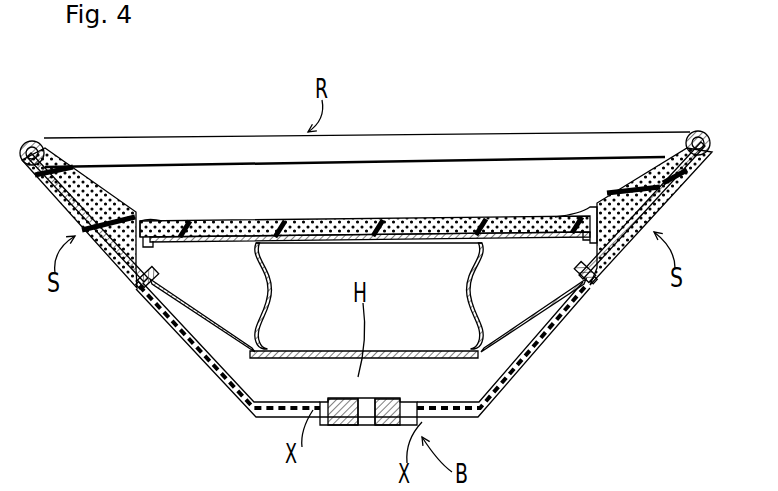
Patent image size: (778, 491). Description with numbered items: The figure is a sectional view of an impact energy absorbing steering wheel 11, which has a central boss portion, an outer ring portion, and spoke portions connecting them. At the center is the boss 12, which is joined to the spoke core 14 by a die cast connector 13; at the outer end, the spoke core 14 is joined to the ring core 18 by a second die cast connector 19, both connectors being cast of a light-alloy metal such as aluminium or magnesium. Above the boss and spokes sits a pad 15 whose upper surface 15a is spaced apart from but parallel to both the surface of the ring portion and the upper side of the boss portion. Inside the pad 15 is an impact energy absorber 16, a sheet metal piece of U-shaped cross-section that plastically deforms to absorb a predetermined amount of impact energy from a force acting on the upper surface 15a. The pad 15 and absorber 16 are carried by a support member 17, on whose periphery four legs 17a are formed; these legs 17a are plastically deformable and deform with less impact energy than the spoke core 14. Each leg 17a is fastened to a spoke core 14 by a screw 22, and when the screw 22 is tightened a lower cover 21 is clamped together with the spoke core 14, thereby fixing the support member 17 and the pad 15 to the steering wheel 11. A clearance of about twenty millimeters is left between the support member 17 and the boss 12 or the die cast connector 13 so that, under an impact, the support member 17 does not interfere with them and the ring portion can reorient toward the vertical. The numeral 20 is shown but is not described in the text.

The steering wheel 11 is at (580, 58).
The boss 12 is at (350, 427).
The die cast connector 13 is at (388, 397).
The spoke core 14 is at (222, 377).
The pad 15 is at (517, 200).
The upper surface 15a is at (398, 220).
The impact energy absorber 16 is at (463, 278).
The support member 17 is at (310, 350).
The legs 17a is at (196, 306).
The ring core 18 is at (30, 141).
The die cast connector 19 is at (45, 148).
The foam side wall 20 is at (85, 195).
The lower cover 21 is at (185, 338).
The screw 22 is at (136, 290).